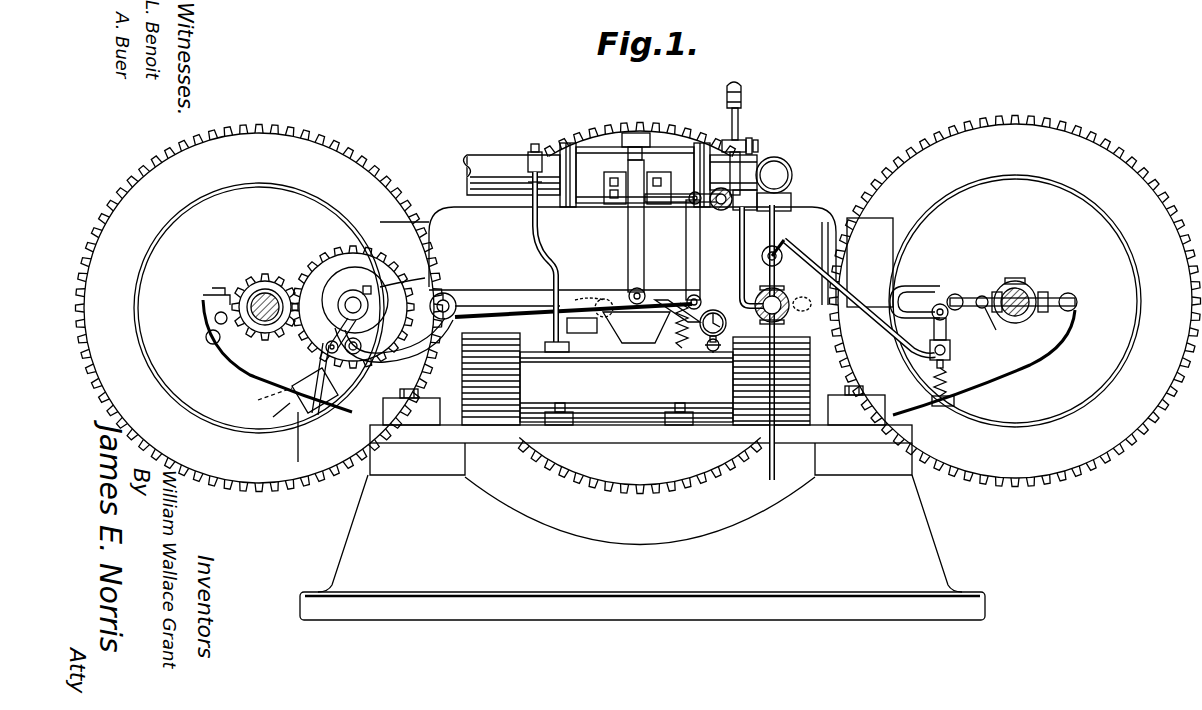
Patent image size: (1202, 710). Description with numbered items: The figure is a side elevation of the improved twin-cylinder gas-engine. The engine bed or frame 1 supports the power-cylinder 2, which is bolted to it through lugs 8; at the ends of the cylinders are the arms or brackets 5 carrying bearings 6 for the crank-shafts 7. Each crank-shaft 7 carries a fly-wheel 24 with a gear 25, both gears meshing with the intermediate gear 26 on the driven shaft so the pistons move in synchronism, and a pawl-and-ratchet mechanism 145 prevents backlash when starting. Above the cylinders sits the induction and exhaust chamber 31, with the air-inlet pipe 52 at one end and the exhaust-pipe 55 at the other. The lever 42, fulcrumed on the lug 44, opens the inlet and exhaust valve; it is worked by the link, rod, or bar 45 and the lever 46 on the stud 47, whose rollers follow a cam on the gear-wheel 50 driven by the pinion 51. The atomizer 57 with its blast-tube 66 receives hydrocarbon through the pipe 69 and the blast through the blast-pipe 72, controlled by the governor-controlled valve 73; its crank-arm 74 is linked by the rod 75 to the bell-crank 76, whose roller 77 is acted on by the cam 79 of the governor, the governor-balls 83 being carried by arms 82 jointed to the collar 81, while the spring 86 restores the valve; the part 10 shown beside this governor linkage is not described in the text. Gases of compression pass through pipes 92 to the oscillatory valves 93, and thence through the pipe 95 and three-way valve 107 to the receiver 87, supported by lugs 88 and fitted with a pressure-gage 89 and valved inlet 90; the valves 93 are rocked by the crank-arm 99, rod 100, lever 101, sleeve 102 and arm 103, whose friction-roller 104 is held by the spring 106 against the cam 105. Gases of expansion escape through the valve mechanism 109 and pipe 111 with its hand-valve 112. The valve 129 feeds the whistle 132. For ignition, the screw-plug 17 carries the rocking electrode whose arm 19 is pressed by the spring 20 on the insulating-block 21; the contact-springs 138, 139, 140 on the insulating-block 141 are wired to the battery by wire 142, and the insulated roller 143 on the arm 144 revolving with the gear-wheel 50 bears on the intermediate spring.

The engine bed or frame 1 is at (642, 522).
The power-cylinder 2 is at (540, 247).
The arms or brackets 5 is at (576, 360).
The bearings 6 is at (1018, 282).
The crank-shaft 7 is at (1028, 292).
The lugs 8 is at (634, 405).
The guide loop 10 is at (900, 288).
The screw-plug 17 is at (636, 327).
The arm 19 is at (612, 300).
The spring 20 is at (578, 318).
The insulating-block 21 is at (610, 345).
The fly-wheel 24 is at (617, 289).
The gears 25 is at (97, 242).
The intermediate gear 26 is at (672, 128).
The induction and exhaust chamber 31 is at (658, 175).
The lever 42 is at (638, 133).
The lug 44 is at (650, 185).
The link, rod, or bar 45 is at (660, 300).
The lever 46 is at (564, 279).
The stud or support 47 is at (452, 300).
The gear-wheel 50 is at (360, 248).
The pinion 51 is at (270, 285).
The air-inlet pipe 52 is at (772, 160).
The exhaust-pipe 55 is at (512, 175).
The atomizer 57 is at (805, 205).
The blast-tube 66 is at (792, 176).
The pipe 69 is at (776, 456).
The blast-pipe 72 is at (771, 224).
The cam-actuated and governor-controlled valve 73 is at (780, 262).
The crank-arm 74 is at (784, 243).
The rod 75 is at (860, 300).
The bell-crank 76 is at (946, 336).
The roller 77 is at (990, 329).
The cam 79 is at (1012, 278).
The collar 81 is at (1060, 330).
The arms 82 is at (982, 296).
The governor-balls 83 is at (955, 294).
The spring 86 is at (950, 386).
The receiver 87 is at (626, 387).
The lugs 88 is at (619, 424).
The pressure-gage 89 is at (727, 324).
The valved inlet 90 is at (722, 346).
The pipes 92 is at (648, 200).
The oscillatory valves 93 is at (757, 145).
The pipe 95 is at (745, 256).
The crank-arm 99 is at (719, 210).
The rod, link or bar 100 is at (700, 262).
The lever 101 is at (540, 315).
The sleeve 102 is at (507, 307).
The arm 103 is at (410, 350).
The friction-roller 104 is at (362, 352).
The cam 105 is at (400, 285).
The spring 106 is at (686, 352).
The three-way valve 107 is at (778, 320).
The valve mechanism 109 is at (536, 150).
The pipe 111 is at (548, 240).
The hand-valve 112 is at (530, 190).
The valve 129 is at (740, 138).
The whistle 132 is at (742, 92).
The contact-spring 138 is at (320, 392).
The contact-spring 139 is at (303, 380).
The contact-spring 140 is at (300, 380).
The insulating-block 141 is at (270, 418).
The wire 142 is at (300, 447).
The insulated roller 143 is at (338, 315).
The adjustably-mounted arm 144 is at (372, 312).
The pawl-and-ratchet mechanism 145 is at (210, 350).